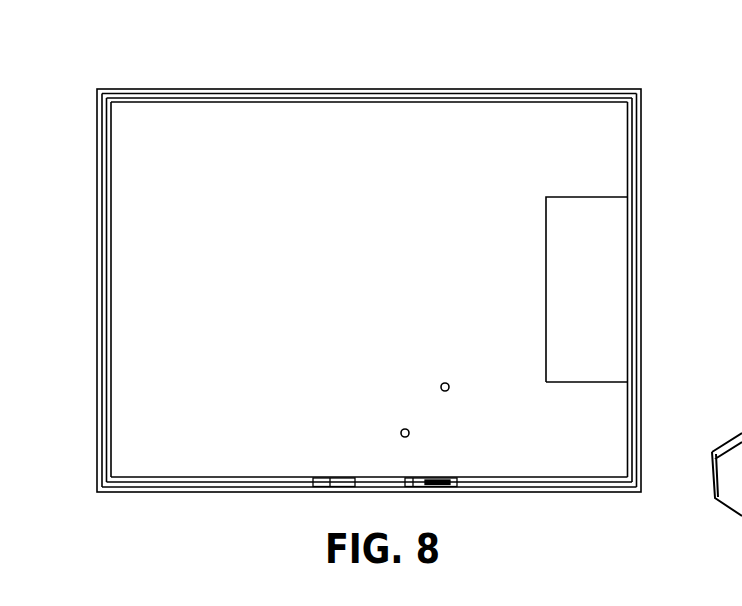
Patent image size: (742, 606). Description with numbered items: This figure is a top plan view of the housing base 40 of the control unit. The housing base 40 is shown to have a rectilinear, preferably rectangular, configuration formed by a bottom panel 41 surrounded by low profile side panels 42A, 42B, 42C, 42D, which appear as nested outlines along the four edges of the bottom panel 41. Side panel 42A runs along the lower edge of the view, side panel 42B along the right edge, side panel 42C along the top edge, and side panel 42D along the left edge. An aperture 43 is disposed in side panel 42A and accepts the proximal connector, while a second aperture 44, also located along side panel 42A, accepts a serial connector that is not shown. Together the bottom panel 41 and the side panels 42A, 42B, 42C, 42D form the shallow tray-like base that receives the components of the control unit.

The housing base 40 is at (205, 507).
The bottom panel 41 is at (323, 304).
The side panel 42A is at (563, 492).
The side panel 42B is at (641, 325).
The side panel 42C is at (355, 89).
The side panel 42D is at (98, 382).
The aperture 43 is at (437, 488).
The aperture 44 is at (334, 478).